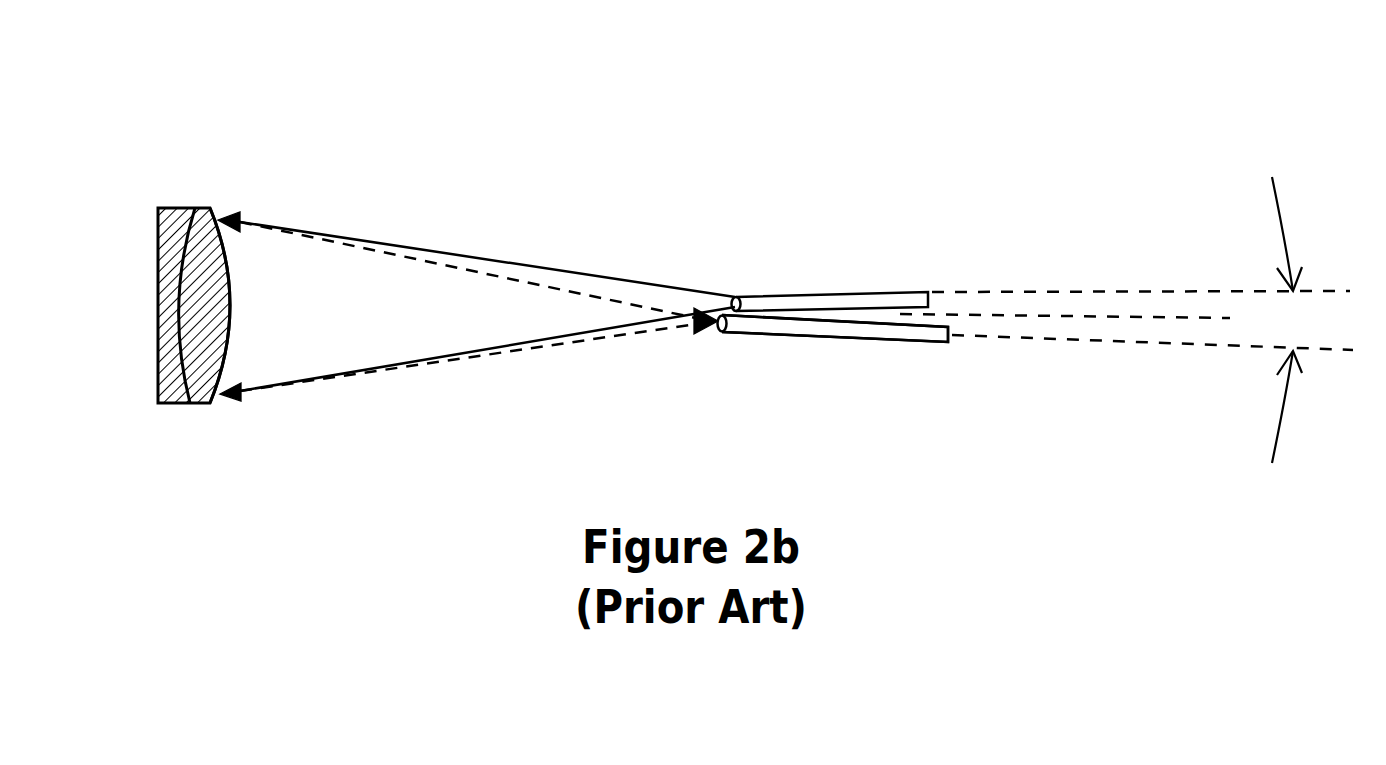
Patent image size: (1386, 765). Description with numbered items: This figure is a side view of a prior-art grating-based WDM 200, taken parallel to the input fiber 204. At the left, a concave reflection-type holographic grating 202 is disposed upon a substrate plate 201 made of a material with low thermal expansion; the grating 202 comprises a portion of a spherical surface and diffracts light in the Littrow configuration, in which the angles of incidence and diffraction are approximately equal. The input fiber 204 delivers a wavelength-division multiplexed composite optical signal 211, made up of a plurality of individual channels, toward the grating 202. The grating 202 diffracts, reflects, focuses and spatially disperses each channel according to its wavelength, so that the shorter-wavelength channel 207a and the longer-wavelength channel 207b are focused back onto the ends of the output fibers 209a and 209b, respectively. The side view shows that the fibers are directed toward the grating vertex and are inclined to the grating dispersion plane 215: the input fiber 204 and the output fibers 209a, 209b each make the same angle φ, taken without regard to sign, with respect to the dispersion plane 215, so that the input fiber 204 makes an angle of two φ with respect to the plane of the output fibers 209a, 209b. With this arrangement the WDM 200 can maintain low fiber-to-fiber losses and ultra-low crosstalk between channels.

The grating-based WDM 200 is at (333, 120).
The substrate plate 201 is at (167, 403).
The concave reflection-type holographic grating 202 is at (227, 360).
The input fiber 204 is at (880, 292).
The channel λ1 207a is at (578, 292).
The channel λ2 207b is at (610, 342).
The output fiber 209a is at (905, 340).
The output fiber 209b is at (835, 328).
The composite optical signal 211 is at (467, 260).
The grating dispersion plane 215 is at (1144, 318).